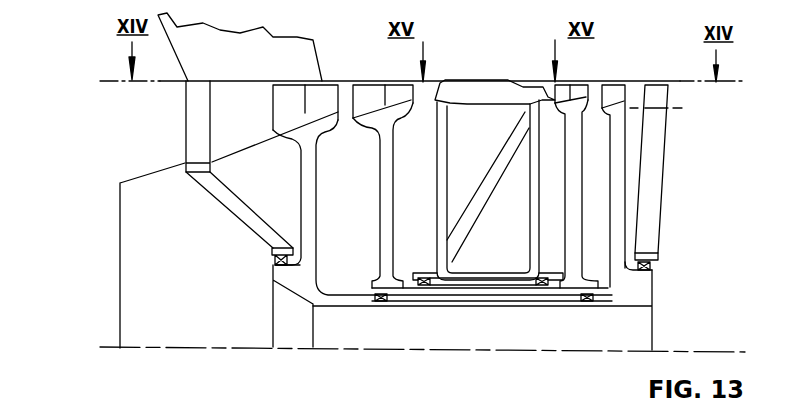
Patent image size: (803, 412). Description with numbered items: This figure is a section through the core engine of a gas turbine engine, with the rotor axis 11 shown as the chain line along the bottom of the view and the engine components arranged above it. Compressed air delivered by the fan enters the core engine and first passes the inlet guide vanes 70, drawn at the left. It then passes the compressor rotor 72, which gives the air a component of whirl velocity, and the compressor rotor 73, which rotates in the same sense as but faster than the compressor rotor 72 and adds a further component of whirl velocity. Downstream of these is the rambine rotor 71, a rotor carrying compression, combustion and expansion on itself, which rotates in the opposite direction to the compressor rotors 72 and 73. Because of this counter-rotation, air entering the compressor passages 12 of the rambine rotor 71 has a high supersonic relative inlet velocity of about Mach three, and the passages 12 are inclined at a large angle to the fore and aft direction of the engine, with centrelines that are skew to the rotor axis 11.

The rotor axis 11 is at (35, 352).
The compressor passage 12 is at (433, 97).
The inlet guide vanes 70 is at (193, 117).
The rambine rotor 71 is at (483, 77).
The compressor rotor 72 is at (281, 106).
The compressor rotor 73 is at (372, 90).